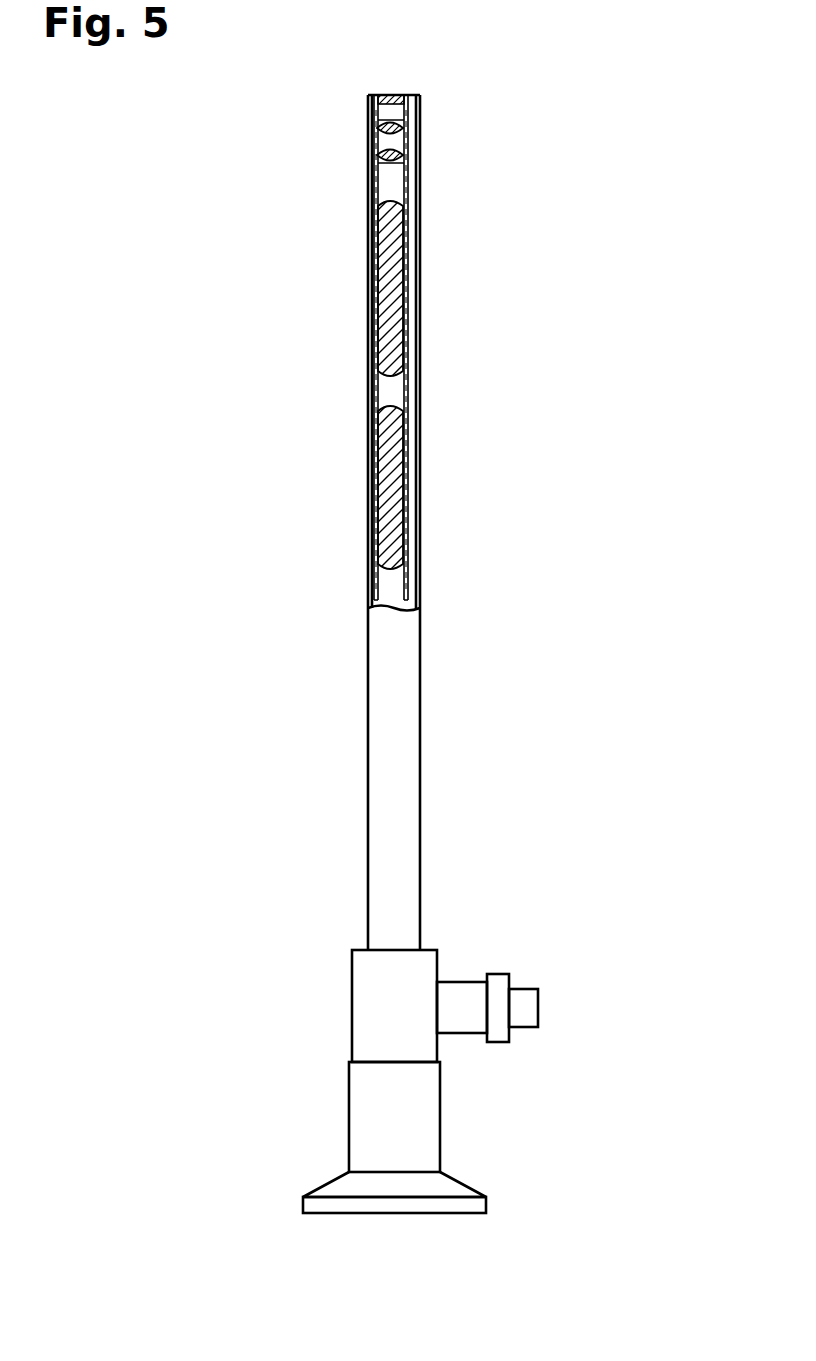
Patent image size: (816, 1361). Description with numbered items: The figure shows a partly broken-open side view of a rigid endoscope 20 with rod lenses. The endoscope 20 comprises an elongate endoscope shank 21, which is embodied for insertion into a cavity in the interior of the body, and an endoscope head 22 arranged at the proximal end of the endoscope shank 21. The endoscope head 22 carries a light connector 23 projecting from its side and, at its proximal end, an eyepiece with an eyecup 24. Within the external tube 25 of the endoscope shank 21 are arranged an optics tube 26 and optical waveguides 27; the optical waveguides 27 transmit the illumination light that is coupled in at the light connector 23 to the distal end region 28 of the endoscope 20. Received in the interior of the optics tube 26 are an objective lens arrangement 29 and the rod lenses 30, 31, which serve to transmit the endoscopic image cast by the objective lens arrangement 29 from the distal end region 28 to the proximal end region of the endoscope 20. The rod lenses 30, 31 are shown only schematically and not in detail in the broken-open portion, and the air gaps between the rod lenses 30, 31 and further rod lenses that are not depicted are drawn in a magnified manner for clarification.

The rigid endoscope 20 is at (152, 609).
The endoscope shank 21 is at (331, 676).
The endoscope head 22 is at (305, 1102).
The light connector 23 is at (562, 960).
The eyecup 24 is at (440, 1187).
The external tube 25 is at (417, 185).
The optics tube 26 is at (375, 188).
The optical waveguides 27 is at (410, 96).
The distal end region 28 is at (509, 85).
The objective lens arrangement 29 is at (355, 127).
The rod lens 30 is at (390, 302).
The rod lens 31 is at (388, 510).